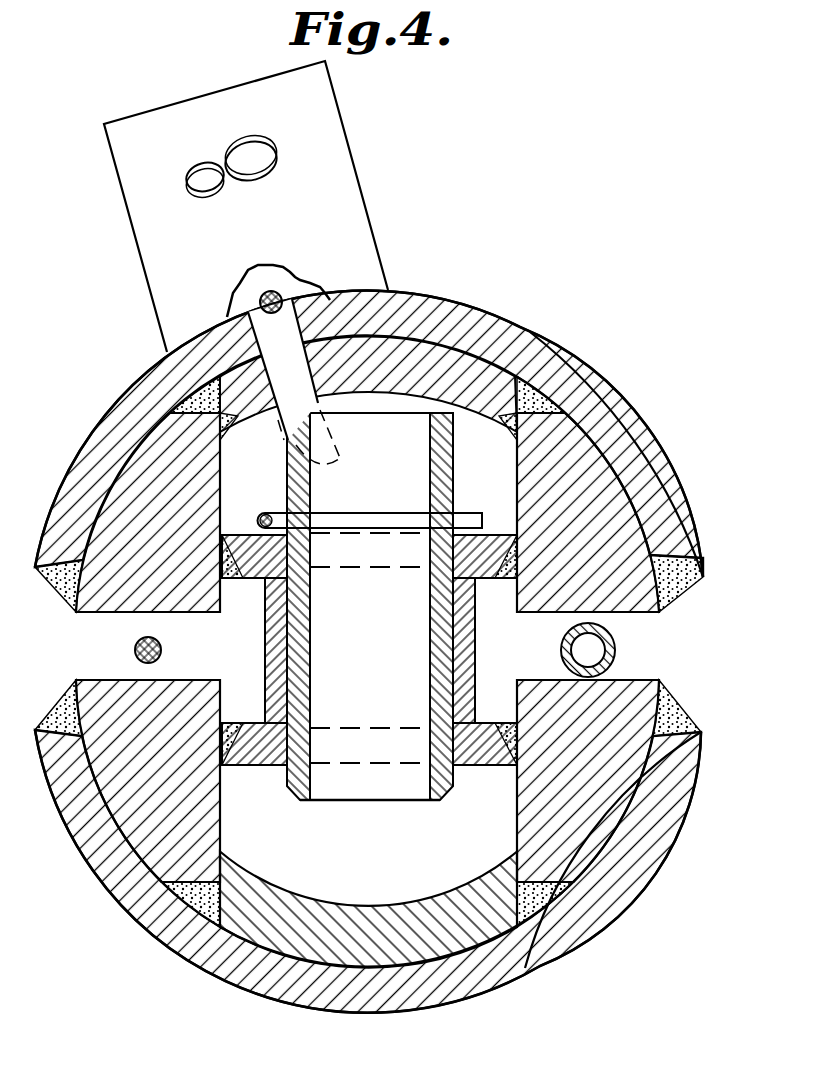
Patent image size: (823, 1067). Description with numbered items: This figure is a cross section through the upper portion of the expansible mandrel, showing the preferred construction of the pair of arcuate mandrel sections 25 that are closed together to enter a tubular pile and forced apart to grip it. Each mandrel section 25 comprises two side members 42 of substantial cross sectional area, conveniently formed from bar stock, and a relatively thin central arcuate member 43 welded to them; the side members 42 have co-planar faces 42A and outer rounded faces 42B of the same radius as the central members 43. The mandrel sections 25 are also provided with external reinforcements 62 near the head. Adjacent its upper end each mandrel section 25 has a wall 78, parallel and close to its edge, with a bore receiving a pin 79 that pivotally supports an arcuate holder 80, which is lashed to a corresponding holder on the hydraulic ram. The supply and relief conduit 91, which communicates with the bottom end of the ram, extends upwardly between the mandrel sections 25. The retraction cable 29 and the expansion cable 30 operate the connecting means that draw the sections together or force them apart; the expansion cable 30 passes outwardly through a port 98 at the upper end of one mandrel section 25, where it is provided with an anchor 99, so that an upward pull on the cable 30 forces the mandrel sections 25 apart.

The anchor 99 is at (138, 268).
The expansion cable 30 is at (297, 270).
The port 98 is at (397, 293).
The central arcuate member 43 is at (472, 358).
The mandrel section 25 is at (612, 408).
The external reinforcement 62 is at (672, 474).
The wall 78 is at (485, 528).
The retraction cable 29 is at (134, 651).
The co-planar face 42A is at (193, 680).
The side member 42 is at (543, 690).
The outer rounded face 42B is at (703, 733).
The supply and relief conduit 91 is at (616, 653).
The pin 79 is at (349, 788).
The arcuate holder 80 is at (478, 722).